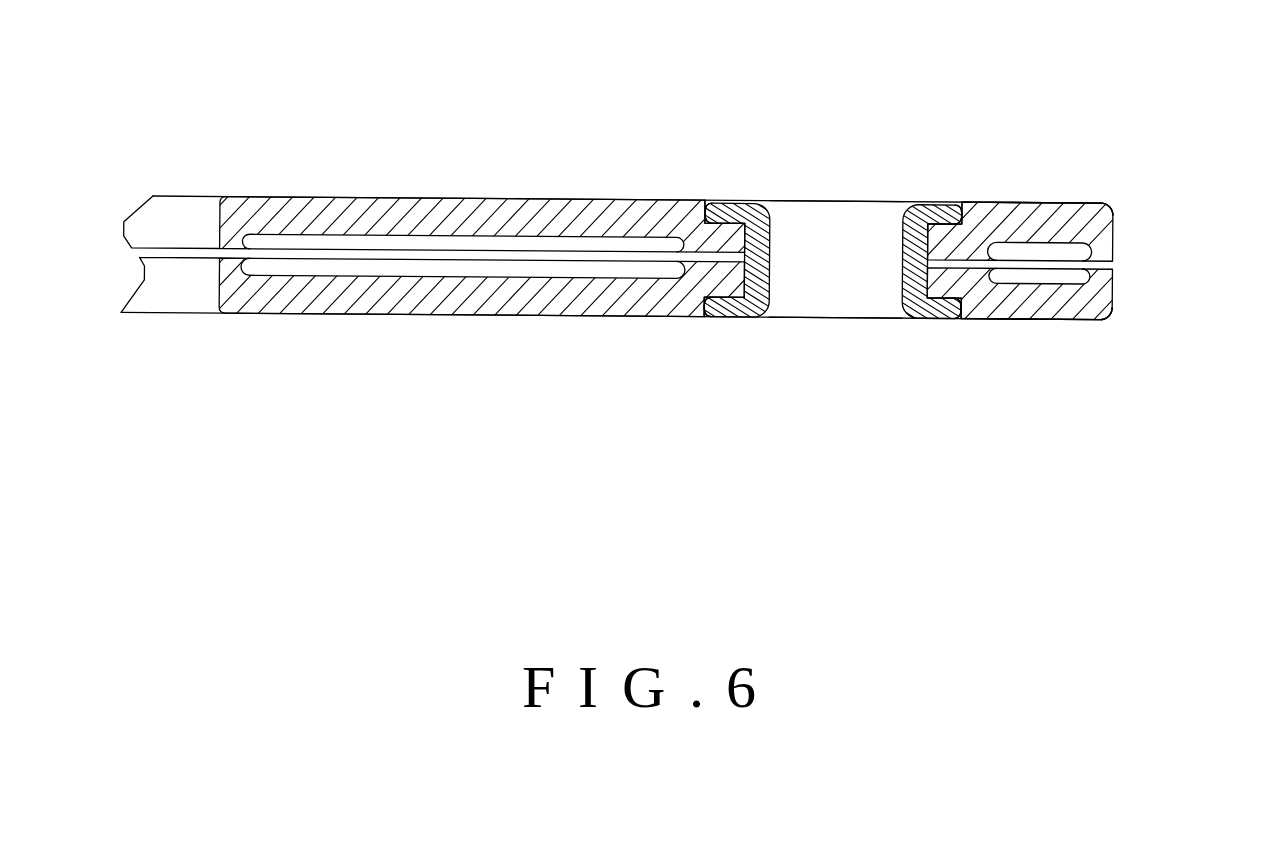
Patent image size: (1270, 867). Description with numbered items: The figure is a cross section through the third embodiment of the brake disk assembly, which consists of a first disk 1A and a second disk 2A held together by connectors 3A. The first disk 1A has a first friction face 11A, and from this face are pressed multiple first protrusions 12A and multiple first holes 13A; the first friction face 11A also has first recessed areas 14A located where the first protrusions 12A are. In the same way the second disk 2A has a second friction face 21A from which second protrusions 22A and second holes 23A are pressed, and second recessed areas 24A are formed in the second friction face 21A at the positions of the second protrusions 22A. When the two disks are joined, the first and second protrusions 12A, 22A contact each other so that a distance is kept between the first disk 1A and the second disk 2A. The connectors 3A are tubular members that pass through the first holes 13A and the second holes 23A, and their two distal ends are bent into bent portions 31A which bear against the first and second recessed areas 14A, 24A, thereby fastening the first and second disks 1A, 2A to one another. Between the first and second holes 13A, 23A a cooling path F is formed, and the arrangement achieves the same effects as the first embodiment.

The first disk 1A is at (1118, 298).
The second disk 2A is at (1118, 227).
The connector 3A is at (765, 318).
The first friction face 11A is at (1087, 325).
The first protrusion 12A is at (723, 277).
The first hole 13A is at (838, 318).
The first recessed area 14A is at (715, 305).
The second friction face 21A is at (1090, 205).
The second protrusion 22A is at (742, 262).
The second hole 23A is at (812, 202).
The second recessed area 24A is at (710, 202).
The bent portion 31A is at (725, 206).
The cooling path F is at (840, 240).